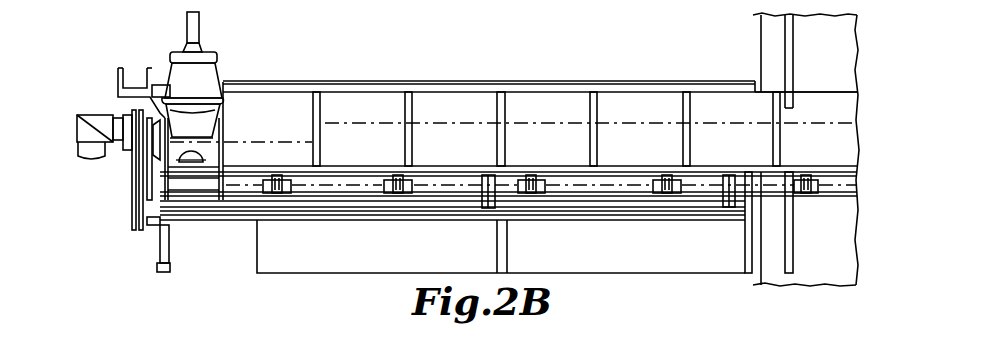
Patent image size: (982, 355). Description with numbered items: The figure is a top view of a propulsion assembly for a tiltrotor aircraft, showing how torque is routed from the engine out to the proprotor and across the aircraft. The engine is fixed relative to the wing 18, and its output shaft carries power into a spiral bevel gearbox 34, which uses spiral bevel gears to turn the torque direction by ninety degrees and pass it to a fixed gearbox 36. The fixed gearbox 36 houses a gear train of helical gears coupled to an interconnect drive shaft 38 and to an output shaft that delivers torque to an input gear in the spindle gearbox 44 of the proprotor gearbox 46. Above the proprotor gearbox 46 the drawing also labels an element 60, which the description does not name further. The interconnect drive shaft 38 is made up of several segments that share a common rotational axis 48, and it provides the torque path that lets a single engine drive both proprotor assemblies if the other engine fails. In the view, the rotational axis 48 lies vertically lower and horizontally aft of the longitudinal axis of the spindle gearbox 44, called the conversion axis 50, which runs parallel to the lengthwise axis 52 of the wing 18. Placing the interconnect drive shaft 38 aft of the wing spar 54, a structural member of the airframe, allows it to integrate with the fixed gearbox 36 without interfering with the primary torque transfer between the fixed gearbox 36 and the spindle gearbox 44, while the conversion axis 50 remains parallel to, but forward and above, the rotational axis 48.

The wing 18 is at (450, 110).
The spiral bevel gearbox 34 is at (97, 113).
The fixed gearbox 36 is at (131, 220).
The interconnect drive shaft 38 is at (243, 197).
The spindle gearbox 44 is at (178, 150).
The proprotor gearbox 46 is at (218, 53).
The rotational axis 48 is at (328, 192).
The conversion axis 50 is at (270, 140).
The lengthwise axis 52 is at (540, 121).
The wing spar 54 is at (630, 172).
The hopper rod 60 is at (186, 30).